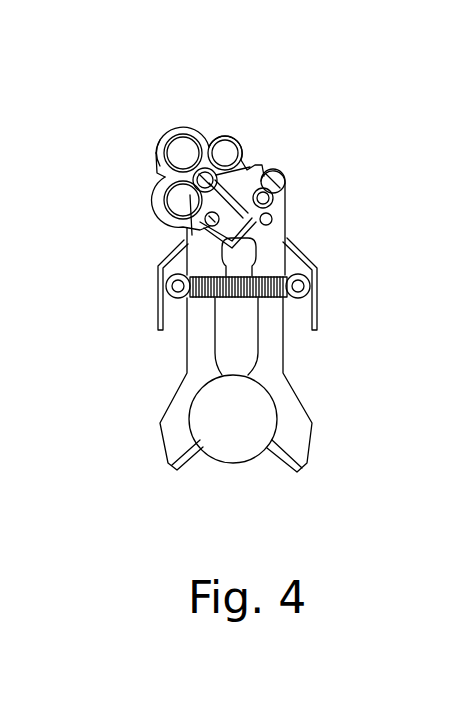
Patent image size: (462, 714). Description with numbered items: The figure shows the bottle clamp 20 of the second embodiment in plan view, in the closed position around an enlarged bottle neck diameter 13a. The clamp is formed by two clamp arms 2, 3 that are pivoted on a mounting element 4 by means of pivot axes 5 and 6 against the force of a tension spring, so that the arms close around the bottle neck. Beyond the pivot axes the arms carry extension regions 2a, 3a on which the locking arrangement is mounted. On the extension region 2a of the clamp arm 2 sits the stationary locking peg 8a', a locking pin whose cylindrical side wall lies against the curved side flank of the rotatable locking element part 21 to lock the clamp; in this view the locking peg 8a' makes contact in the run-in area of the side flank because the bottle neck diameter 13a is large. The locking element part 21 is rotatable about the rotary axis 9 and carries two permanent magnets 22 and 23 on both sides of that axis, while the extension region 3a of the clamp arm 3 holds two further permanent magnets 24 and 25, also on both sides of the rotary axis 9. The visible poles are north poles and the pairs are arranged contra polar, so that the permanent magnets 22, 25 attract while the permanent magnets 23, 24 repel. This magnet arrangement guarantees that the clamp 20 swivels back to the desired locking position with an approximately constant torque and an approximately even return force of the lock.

The clamp arm 2 is at (283, 380).
The extension region 2a is at (277, 197).
The clamp arm 3 is at (186, 372).
The extension region 3a is at (153, 147).
The mounting element 4 is at (308, 256).
The pivot axis 5 is at (288, 212).
The pivot axis 6 is at (190, 232).
The locking peg 8a' is at (339, 137).
The rotary axis 9 is at (158, 165).
The bottle neck diameter 13a is at (276, 421).
The bottle clamp 20 is at (300, 126).
The locking element part 21 is at (224, 133).
The permanent magnet 22 is at (247, 153).
The permanent magnet 23 is at (203, 218).
The permanent magnet 24 is at (163, 198).
The permanent magnet 25 is at (180, 150).